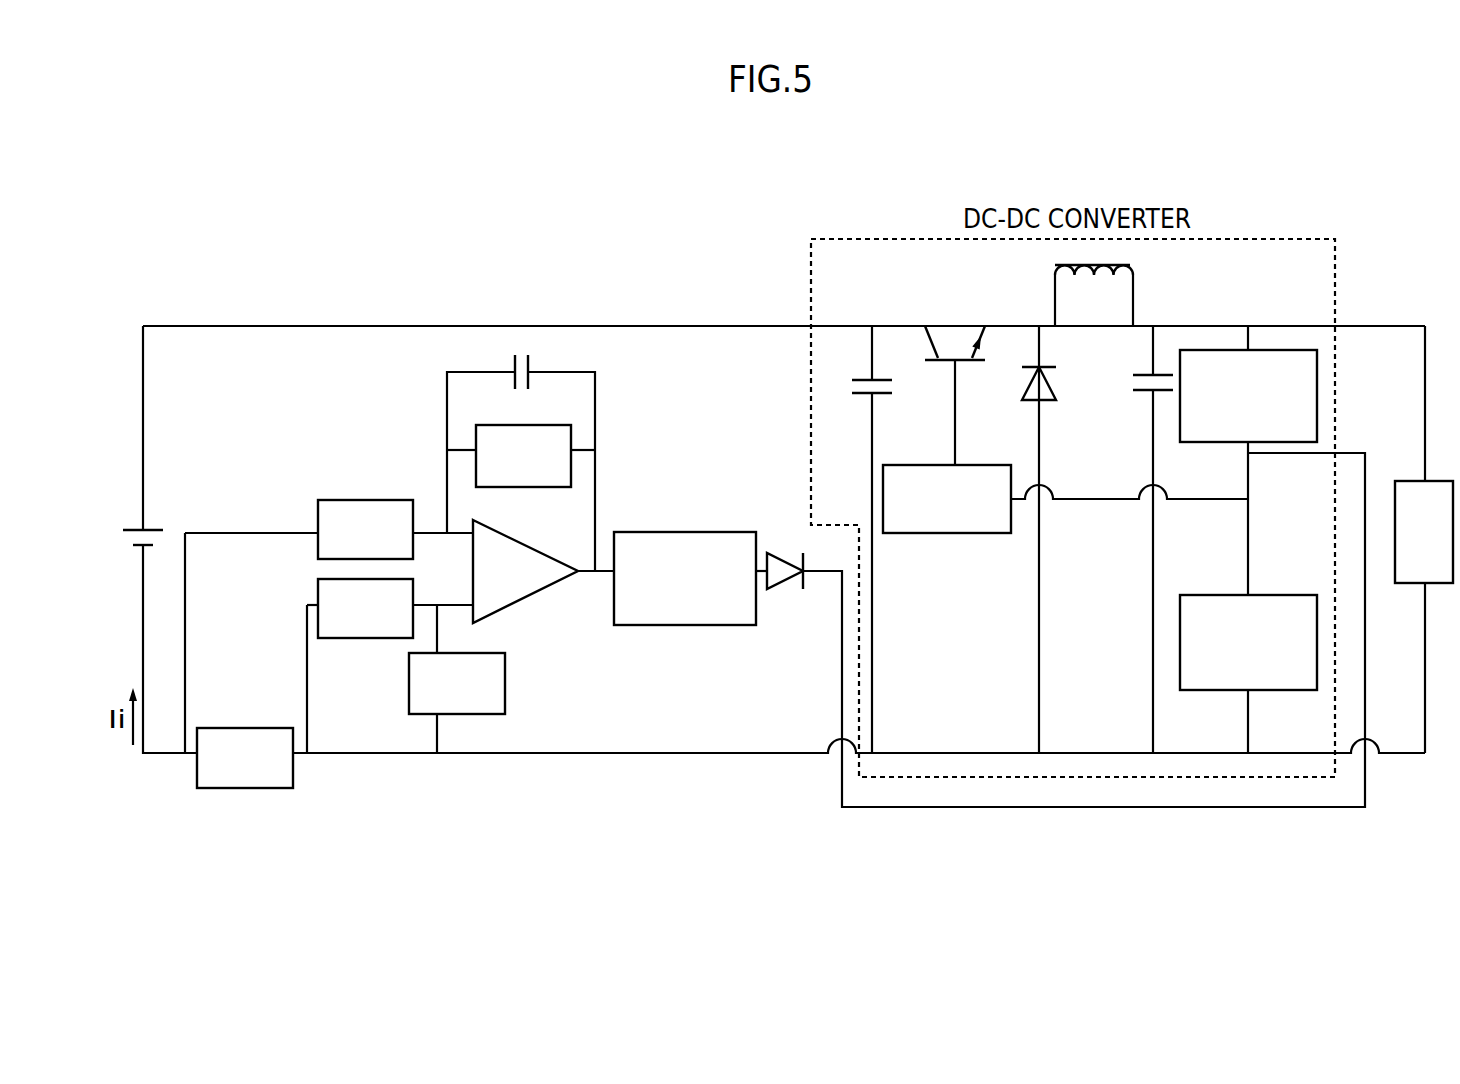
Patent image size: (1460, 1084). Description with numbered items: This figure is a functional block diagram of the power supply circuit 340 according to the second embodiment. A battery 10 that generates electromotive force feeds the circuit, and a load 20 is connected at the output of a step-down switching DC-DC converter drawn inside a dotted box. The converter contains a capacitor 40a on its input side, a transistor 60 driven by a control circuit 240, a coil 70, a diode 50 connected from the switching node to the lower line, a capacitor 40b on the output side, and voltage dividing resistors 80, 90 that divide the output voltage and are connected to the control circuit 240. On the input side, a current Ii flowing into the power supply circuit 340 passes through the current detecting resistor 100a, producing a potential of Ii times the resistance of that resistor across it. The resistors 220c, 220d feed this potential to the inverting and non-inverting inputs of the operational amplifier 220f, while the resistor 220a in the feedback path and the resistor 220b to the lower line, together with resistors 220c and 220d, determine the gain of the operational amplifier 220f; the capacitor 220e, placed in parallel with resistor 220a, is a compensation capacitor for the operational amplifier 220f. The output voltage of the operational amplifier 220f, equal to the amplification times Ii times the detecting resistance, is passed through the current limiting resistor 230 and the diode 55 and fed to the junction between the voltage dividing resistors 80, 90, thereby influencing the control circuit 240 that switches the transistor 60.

The battery 10 is at (150, 530).
The load 20 is at (1410, 481).
The capacitor 40a is at (862, 380).
The capacitor 40b is at (1141, 375).
The diode 50 is at (1055, 376).
The diode 55 is at (782, 553).
The transistor 60 is at (982, 336).
The coil 70 is at (1133, 285).
The voltage dividing resistor 80 is at (1317, 372).
The voltage dividing resistor 90 is at (1278, 595).
The resistor 100a is at (222, 728).
The resistor 220a is at (503, 425).
The resistor 220b is at (409, 680).
The resistor 220c is at (318, 510).
The resistor 220d is at (318, 590).
The capacitor 220e is at (531, 376).
The operational amplifier 220f is at (572, 568).
The current limiting resistor 230 is at (675, 532).
The control circuit 240 is at (961, 465).
The power supply circuit 340 is at (386, 234).